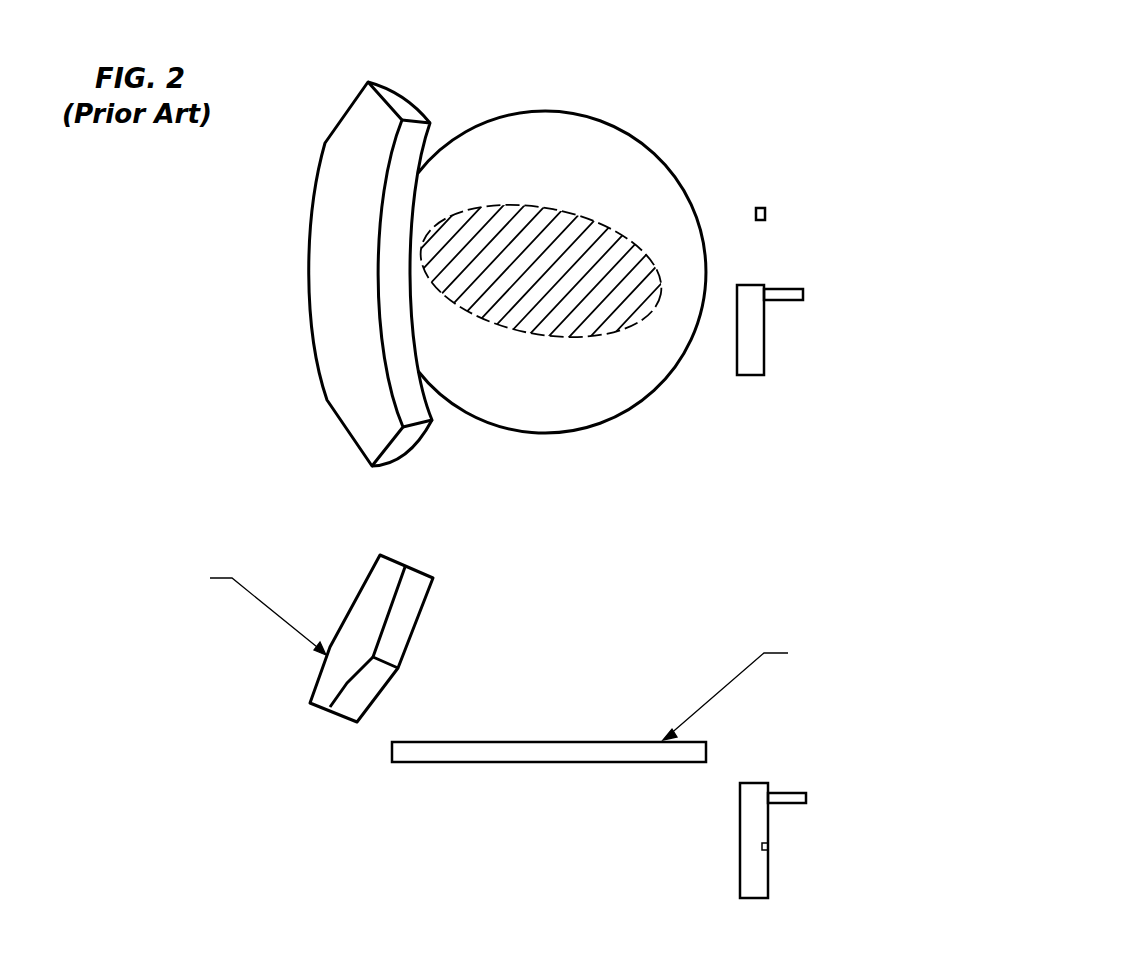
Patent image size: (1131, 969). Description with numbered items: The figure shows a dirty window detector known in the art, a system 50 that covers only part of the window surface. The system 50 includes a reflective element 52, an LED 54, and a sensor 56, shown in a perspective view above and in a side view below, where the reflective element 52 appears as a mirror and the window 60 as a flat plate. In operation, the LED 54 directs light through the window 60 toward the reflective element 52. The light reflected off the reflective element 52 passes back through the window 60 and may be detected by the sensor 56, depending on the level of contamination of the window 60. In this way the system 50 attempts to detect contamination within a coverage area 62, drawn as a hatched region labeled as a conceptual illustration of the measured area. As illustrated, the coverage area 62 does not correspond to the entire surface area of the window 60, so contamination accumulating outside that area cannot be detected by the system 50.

The system 50 is at (722, 63).
The reflective element 52 is at (302, 293).
The LED 54 is at (765, 207).
The sensor 56 is at (760, 377).
The window 60 is at (555, 423).
The coverage area 62 is at (512, 327).